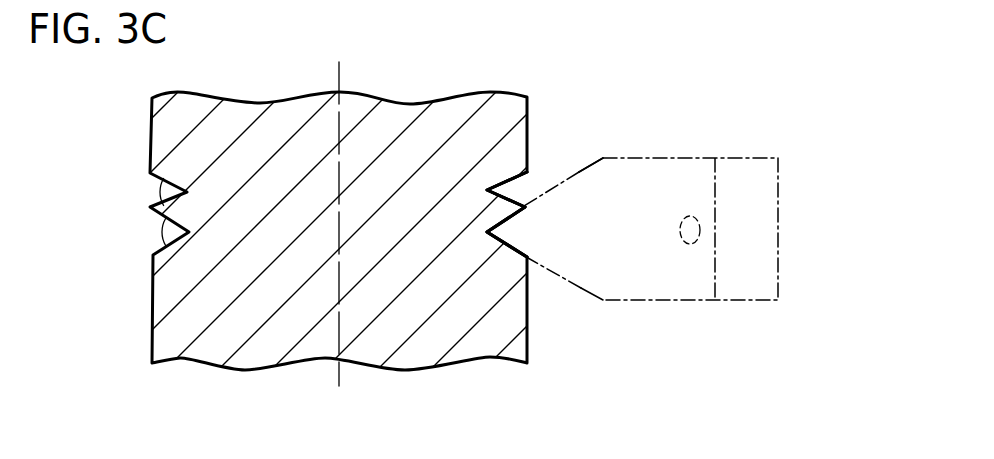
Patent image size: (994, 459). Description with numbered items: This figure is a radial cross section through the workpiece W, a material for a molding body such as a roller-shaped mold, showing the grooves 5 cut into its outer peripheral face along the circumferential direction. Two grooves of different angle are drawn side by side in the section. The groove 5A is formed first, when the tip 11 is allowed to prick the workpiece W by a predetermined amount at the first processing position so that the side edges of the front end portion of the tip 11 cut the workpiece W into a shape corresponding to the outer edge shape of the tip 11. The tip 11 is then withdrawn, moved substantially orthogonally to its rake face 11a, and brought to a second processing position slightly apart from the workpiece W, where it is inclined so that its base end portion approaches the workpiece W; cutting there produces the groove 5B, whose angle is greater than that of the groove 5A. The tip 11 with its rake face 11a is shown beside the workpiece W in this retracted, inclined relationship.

The workpiece W is at (157, 338).
The groove 5A is at (518, 178).
The groove 5B is at (513, 217).
The grooves 5 is at (627, 310).
The tip 11 is at (697, 304).
The rake face 11a is at (584, 198).